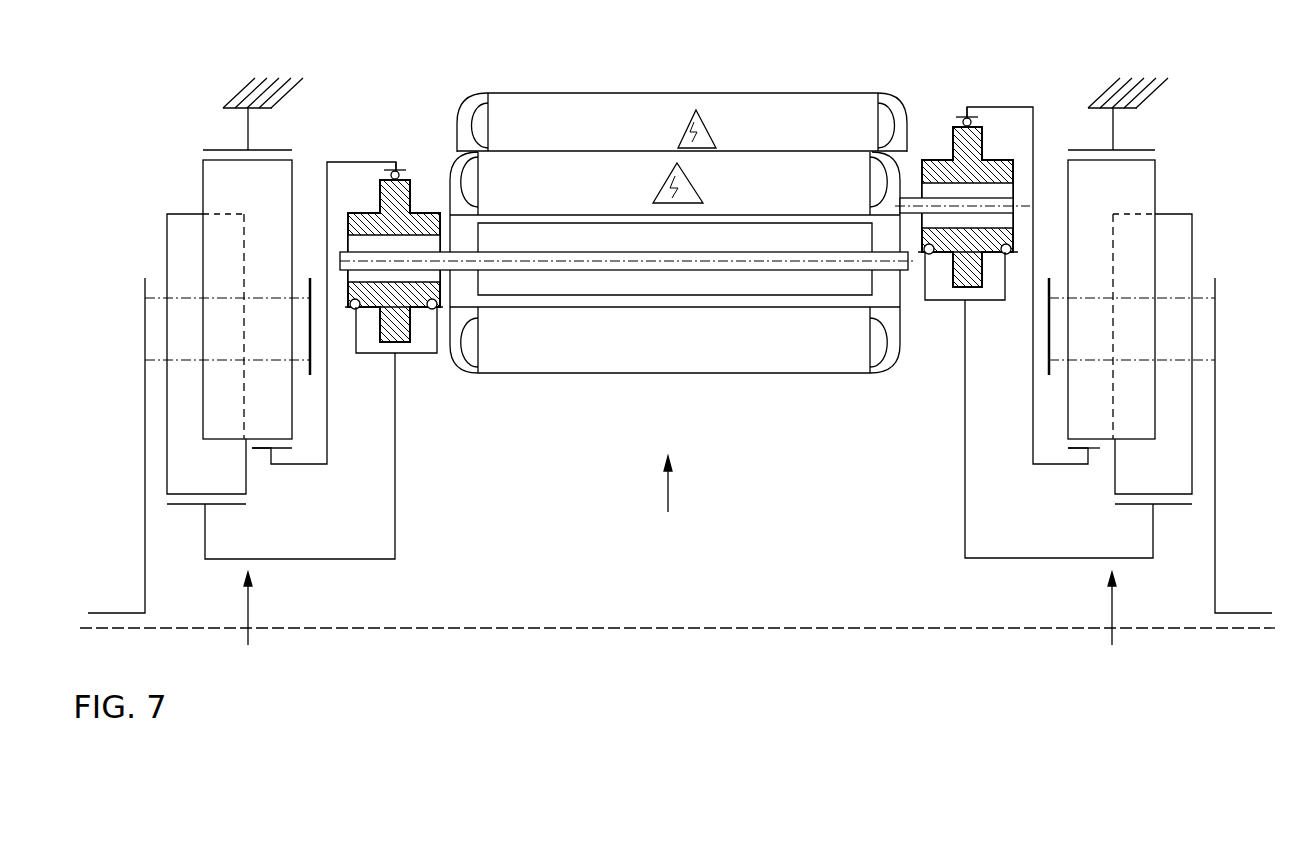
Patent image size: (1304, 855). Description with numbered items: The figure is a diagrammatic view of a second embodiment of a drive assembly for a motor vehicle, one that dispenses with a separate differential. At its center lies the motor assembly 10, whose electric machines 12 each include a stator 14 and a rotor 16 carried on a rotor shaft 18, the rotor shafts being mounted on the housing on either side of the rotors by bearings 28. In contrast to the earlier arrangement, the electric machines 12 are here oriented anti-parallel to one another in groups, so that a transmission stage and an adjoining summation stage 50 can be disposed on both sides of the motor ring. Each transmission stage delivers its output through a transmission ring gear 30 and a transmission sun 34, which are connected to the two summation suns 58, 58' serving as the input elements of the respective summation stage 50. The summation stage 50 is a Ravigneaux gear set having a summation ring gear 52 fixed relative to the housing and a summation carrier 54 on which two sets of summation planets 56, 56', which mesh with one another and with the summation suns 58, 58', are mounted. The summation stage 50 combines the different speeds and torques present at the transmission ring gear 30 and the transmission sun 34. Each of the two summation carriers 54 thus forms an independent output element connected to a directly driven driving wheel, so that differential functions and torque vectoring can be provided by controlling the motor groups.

The motor assembly 10 is at (668, 499).
The electric machine 12 is at (604, 95).
The stator 14 is at (656, 107).
The rotor 16 is at (660, 287).
The rotor shaft 18 is at (467, 262).
The bearing 28 is at (414, 222).
The transmission ring gear 30 is at (396, 170).
The transmission sun 34 is at (395, 364).
The summation stage 50 is at (679, 625).
The summation ring gear 52 is at (215, 150).
The summation carrier 54 is at (145, 333).
The summation planets 56 is at (684, 342).
The summation planets 56' is at (684, 283).
The summation sun 58 is at (682, 451).
The summation sun 58' is at (676, 484).